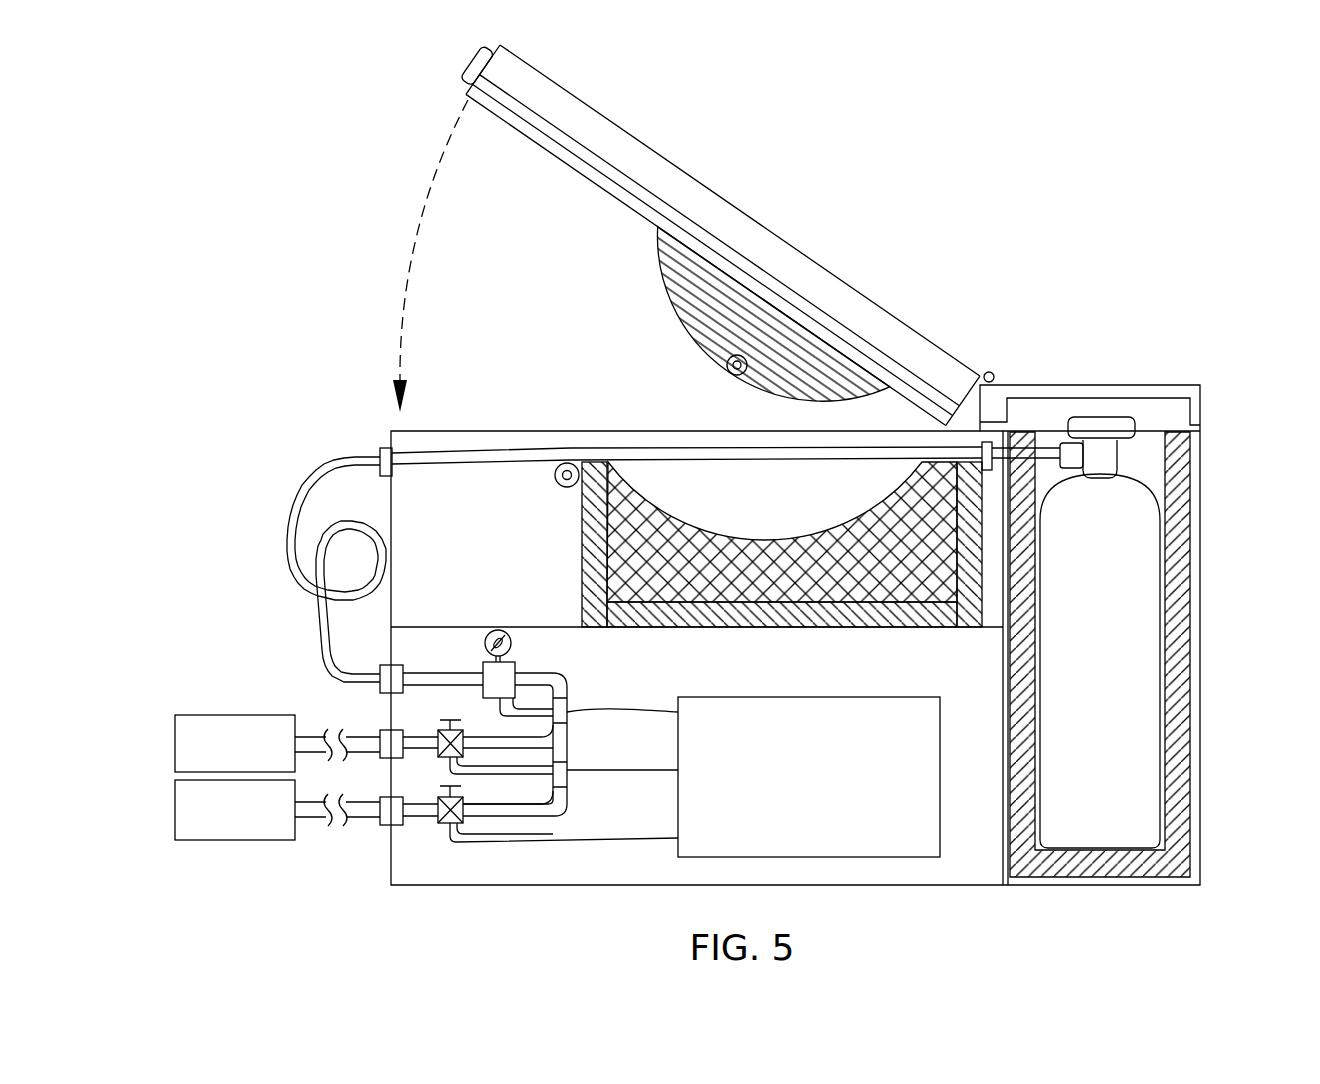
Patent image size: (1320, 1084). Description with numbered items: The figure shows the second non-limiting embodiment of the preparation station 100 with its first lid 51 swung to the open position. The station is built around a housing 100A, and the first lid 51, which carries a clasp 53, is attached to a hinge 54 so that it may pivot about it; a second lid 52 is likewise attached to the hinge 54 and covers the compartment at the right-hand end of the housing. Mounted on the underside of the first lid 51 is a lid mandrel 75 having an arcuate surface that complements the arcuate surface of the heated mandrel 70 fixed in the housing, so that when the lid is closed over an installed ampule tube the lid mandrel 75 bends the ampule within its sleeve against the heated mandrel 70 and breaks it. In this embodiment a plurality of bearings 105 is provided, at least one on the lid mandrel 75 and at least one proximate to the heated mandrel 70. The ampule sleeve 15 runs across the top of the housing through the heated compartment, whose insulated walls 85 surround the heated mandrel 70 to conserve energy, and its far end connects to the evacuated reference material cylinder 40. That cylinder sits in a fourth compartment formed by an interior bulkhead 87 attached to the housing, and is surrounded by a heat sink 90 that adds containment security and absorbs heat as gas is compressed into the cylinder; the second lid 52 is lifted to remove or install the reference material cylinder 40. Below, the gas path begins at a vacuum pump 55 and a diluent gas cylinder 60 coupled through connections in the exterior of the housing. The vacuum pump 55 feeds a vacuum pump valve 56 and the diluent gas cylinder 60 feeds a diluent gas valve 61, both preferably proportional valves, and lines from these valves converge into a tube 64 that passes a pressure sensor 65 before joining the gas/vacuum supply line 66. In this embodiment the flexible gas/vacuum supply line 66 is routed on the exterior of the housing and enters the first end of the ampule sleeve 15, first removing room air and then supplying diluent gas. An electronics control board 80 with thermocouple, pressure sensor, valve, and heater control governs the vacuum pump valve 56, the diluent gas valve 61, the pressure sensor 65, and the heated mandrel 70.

The preparation station 100 is at (255, 165).
The housing 100A is at (392, 885).
The first lid 51 is at (560, 102).
The clasp 53 is at (463, 66).
The hinge 54 is at (994, 371).
The second lid 52 is at (1172, 390).
The heat sink 90 is at (1178, 730).
The reference material cylinder 40 is at (1118, 592).
The heated mandrel 70 is at (857, 543).
The lid mandrel 75 is at (657, 227).
The plurality of bearings 105 is at (566, 462).
The ampule sleeve 15 is at (712, 446).
The insulated walls 85 is at (593, 526).
The gas/vacuum supply line 66 is at (300, 507).
The tube 64 is at (363, 681).
The pressure sensor 65 is at (483, 662).
The vacuum pump valve 56 is at (436, 736).
The diluent gas valve 61 is at (440, 824).
The vacuum pump 55 is at (203, 714).
The diluent gas cylinder 60 is at (195, 840).
The electronics control board 80 is at (848, 838).
The interior bulkhead 87 is at (1005, 765).